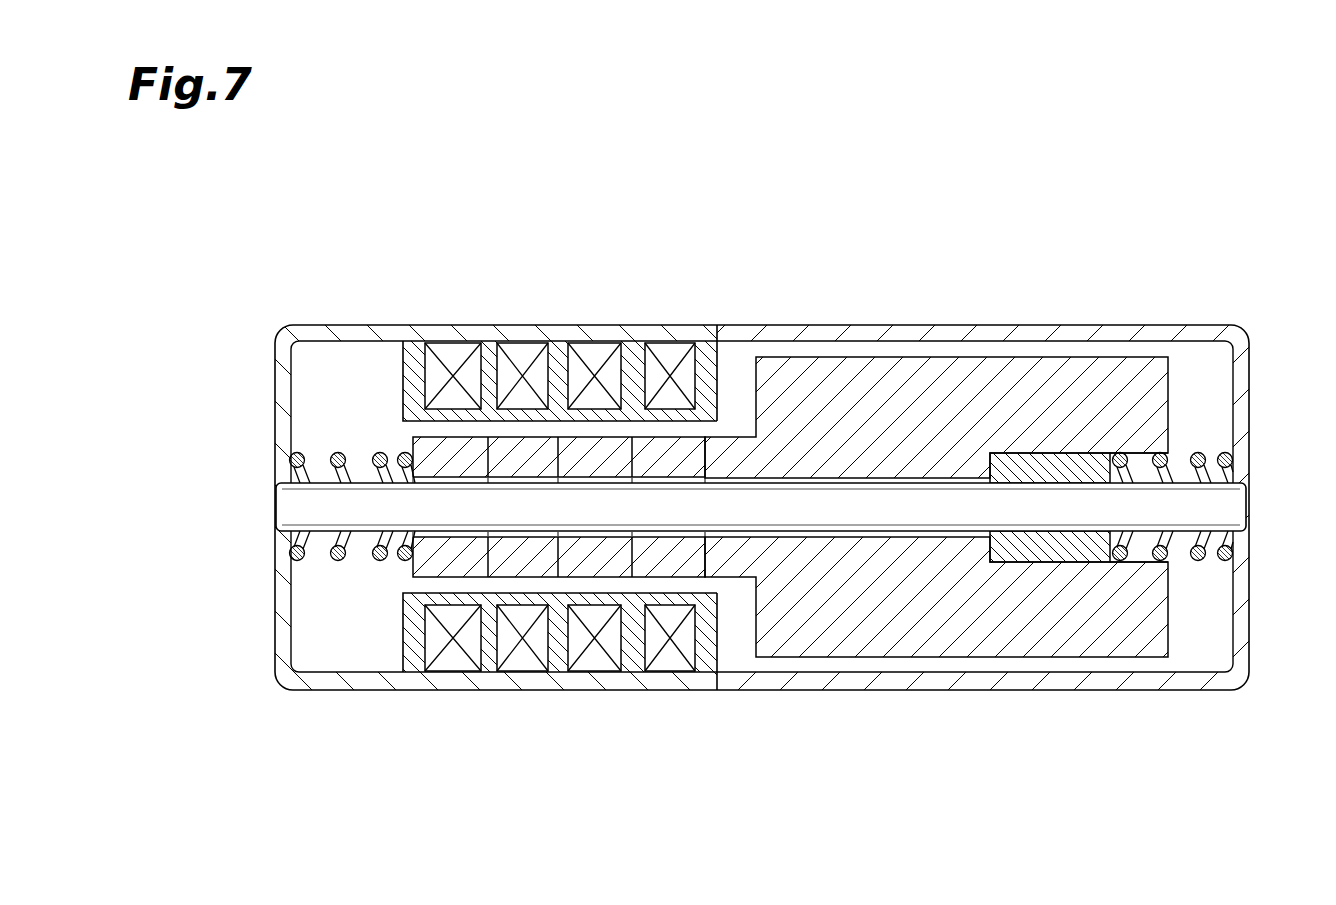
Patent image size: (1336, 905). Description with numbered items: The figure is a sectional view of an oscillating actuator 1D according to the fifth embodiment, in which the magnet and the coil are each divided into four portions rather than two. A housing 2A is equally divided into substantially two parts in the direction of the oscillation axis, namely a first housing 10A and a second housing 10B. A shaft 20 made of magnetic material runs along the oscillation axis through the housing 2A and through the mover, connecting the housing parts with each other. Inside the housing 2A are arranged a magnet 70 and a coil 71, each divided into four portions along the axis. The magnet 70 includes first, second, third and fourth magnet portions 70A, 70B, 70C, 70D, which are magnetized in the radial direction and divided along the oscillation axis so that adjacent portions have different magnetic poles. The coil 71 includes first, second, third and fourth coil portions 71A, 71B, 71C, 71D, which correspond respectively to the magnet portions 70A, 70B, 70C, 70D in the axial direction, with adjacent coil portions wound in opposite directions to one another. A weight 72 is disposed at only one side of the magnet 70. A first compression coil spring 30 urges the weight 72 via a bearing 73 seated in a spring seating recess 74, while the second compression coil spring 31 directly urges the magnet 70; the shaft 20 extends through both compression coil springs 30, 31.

The oscillating actuator 1D is at (318, 226).
The housing 2A is at (720, 214).
The first housing 10A is at (907, 328).
The second housing 10B is at (672, 330).
The shaft 20 is at (1228, 500).
The first compression coil spring 30 is at (1197, 453).
The second compression coil spring 31 is at (338, 452).
The magnet 70 is at (418, 249).
The first magnet portion 70A is at (653, 452).
The second magnet portion 70B is at (578, 452).
The third magnet portion 70C is at (510, 452).
The fourth magnet portion 70D is at (436, 452).
The coil 71 is at (413, 791).
The first coil portion 71A is at (663, 655).
The second coil portion 71B is at (592, 655).
The third coil portion 71C is at (520, 655).
The fourth coil portion 71D is at (443, 655).
The weight 72 is at (1168, 632).
The bearing 73 is at (1027, 545).
The spring seating recess 74 is at (1157, 565).